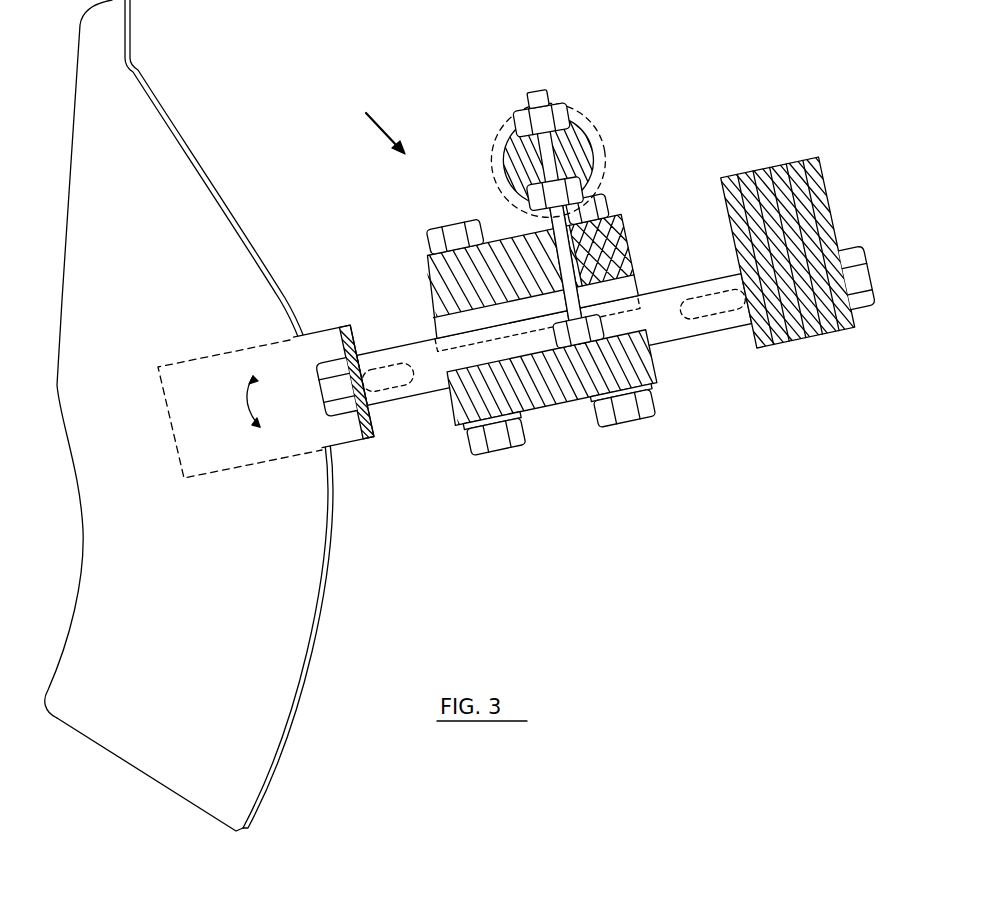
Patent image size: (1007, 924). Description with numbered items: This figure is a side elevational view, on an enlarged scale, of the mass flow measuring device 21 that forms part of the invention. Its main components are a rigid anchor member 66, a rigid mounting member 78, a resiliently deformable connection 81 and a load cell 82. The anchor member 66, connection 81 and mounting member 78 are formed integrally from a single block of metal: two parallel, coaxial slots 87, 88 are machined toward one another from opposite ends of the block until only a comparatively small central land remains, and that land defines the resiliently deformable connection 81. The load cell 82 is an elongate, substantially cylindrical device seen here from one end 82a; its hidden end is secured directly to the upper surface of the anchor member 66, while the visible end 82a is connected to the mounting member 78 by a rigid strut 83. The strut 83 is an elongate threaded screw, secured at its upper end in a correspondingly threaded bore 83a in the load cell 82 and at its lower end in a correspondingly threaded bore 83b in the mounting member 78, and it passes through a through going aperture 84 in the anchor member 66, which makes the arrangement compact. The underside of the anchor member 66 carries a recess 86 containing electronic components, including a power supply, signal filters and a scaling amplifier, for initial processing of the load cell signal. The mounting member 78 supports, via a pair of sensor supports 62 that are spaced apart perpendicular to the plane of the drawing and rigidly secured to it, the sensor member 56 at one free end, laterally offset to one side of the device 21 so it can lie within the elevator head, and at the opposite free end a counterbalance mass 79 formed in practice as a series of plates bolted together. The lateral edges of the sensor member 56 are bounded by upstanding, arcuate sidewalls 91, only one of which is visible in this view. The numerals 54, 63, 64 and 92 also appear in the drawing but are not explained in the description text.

The mass flow measuring device 21 is at (370, 120).
The housing 54 is at (215, 190).
The sensor member 56 is at (245, 218).
The sensor support 62 is at (397, 403).
The clamp bolt 63 is at (457, 228).
The clamp bolt 64 is at (608, 216).
The anchor member 66 is at (425, 262).
The mounting member 78 is at (632, 422).
The counterbalance mass 79 is at (805, 338).
The resiliently deformable connection 81 is at (533, 345).
The load cell 82 is at (497, 130).
The end of load cell 82a is at (590, 150).
The strut 83 is at (640, 280).
The threaded bore 83a is at (580, 122).
The threaded bore 83b is at (653, 355).
The through going aperture 84 is at (638, 248).
The recess 86 is at (553, 106).
The slot 87 is at (445, 415).
The slot 88 is at (628, 325).
The arcuate sidewall 91 is at (195, 787).
The recess 92 is at (498, 248).